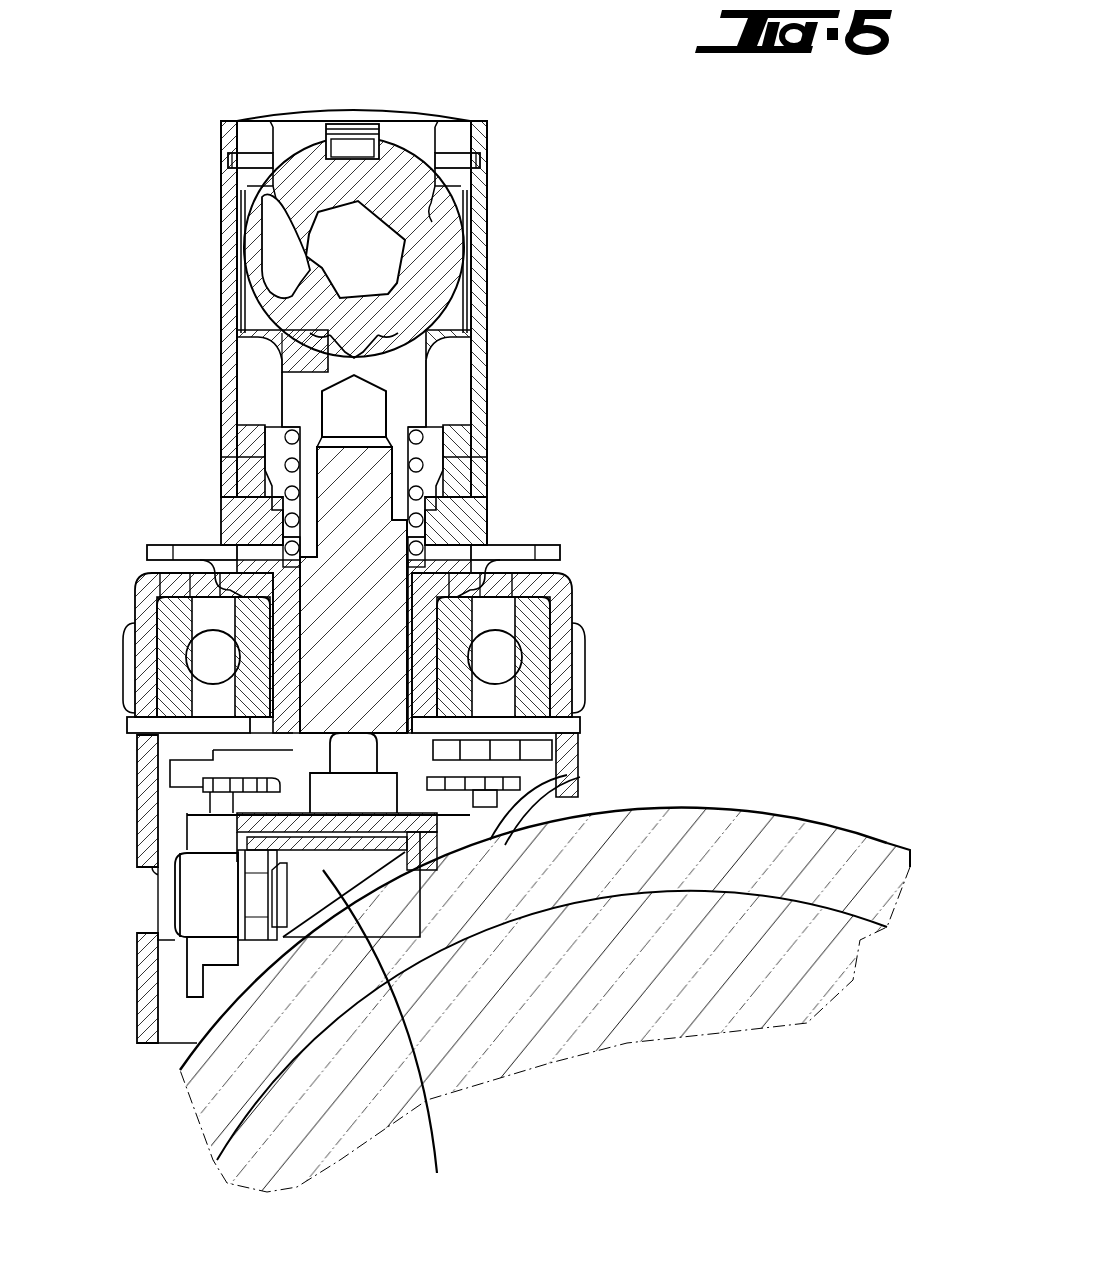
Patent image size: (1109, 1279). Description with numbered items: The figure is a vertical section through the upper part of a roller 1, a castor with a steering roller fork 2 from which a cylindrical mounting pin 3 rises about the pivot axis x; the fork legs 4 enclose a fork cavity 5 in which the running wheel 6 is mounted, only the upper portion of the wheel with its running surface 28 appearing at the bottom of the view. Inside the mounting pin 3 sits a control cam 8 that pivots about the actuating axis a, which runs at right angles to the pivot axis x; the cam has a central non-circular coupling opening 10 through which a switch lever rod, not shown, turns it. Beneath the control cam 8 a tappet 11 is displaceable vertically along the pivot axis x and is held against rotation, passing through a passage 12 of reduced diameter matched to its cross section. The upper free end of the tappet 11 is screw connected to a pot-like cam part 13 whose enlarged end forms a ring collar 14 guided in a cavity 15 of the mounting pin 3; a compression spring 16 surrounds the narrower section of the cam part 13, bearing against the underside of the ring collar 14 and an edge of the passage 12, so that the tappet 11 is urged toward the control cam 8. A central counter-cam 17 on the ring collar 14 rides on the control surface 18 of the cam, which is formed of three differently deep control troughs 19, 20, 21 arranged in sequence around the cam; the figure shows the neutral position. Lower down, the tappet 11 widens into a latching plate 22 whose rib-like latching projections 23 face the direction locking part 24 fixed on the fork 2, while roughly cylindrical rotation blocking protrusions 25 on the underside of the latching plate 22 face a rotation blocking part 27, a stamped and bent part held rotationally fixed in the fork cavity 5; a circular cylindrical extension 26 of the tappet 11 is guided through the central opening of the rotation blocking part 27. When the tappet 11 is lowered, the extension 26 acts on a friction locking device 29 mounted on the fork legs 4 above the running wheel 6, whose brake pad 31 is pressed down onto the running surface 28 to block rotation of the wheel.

The roller 1 is at (598, 152).
The steering roller fork 2 is at (107, 808).
The mounting pin 3 is at (194, 176).
The fork legs 4 is at (175, 983).
The fork cavity 5 is at (487, 750).
The running wheel 6 is at (824, 862).
The control cam 8 is at (447, 232).
The coupling opening 10 is at (368, 210).
The tappet 11 is at (367, 570).
The passage 12 is at (420, 610).
The cam part 13 is at (408, 400).
The ring collar 14 is at (300, 403).
The cavity 15 is at (272, 494).
The compression spring 16 is at (282, 457).
The counter-cam 17 is at (312, 332).
The control surface 18 is at (292, 250).
The control trough 19 is at (350, 338).
The control trough 20 is at (318, 212).
The control trough 21 is at (262, 188).
The latching plate 22 is at (519, 770).
The latching projections 23 is at (527, 743).
The direction locking part 24 is at (178, 726).
The rotation blocking protrusions 25 is at (200, 780).
The circular cylindrical extension 26 is at (293, 797).
The rotation blocking part 27 is at (460, 823).
The running surface 28 is at (771, 817).
The friction locking device 29 is at (205, 903).
The brake pad 31 is at (384, 1042).
The actuating axis a is at (357, 253).
The pivot axis x is at (353, 128).